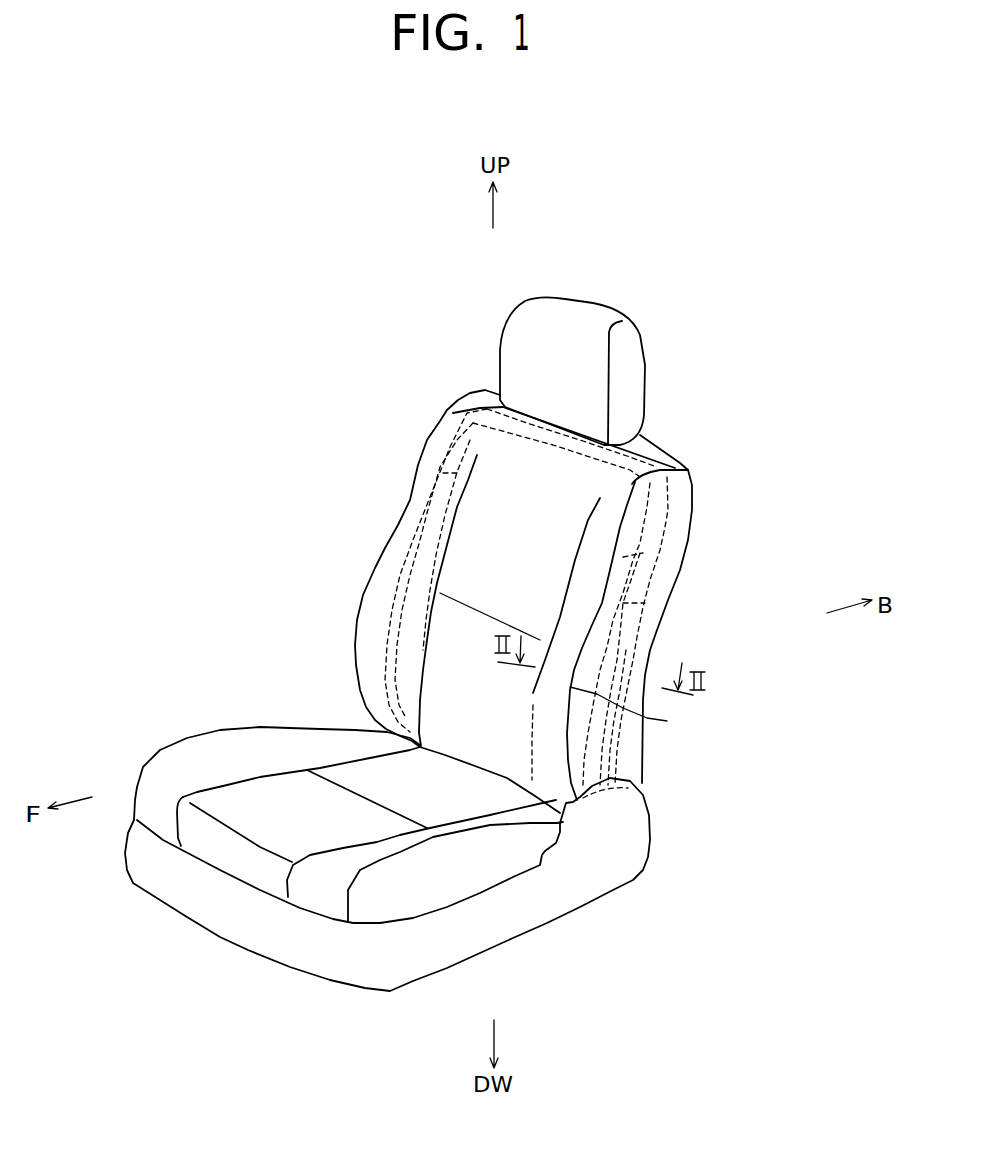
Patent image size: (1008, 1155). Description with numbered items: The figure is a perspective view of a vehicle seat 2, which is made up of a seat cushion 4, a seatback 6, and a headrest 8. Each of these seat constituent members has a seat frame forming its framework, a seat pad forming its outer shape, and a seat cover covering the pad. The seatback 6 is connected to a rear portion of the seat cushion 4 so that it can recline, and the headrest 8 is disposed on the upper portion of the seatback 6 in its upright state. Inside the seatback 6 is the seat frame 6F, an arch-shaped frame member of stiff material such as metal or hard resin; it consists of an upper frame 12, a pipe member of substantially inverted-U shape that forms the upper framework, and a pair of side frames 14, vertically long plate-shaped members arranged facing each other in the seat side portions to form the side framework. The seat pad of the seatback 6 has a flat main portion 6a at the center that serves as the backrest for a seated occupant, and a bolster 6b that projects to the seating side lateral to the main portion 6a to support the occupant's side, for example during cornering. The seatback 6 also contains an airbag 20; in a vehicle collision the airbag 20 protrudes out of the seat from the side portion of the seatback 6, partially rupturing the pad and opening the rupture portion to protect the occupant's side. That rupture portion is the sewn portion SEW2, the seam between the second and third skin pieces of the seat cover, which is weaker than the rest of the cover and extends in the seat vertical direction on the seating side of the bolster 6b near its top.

The vehicle seat 2 is at (706, 300).
The seat cushion 4 is at (223, 793).
The seatback 6 is at (413, 502).
The headrest 8 is at (524, 341).
The upper frame 12 is at (667, 508).
The side frame 14 is at (412, 568).
The airbag 20 is at (637, 630).
The main portion 6a is at (486, 707).
The bolster 6b is at (402, 652).
The seat frame 6F is at (788, 503).
The sewn portion SEW2 is at (697, 713).